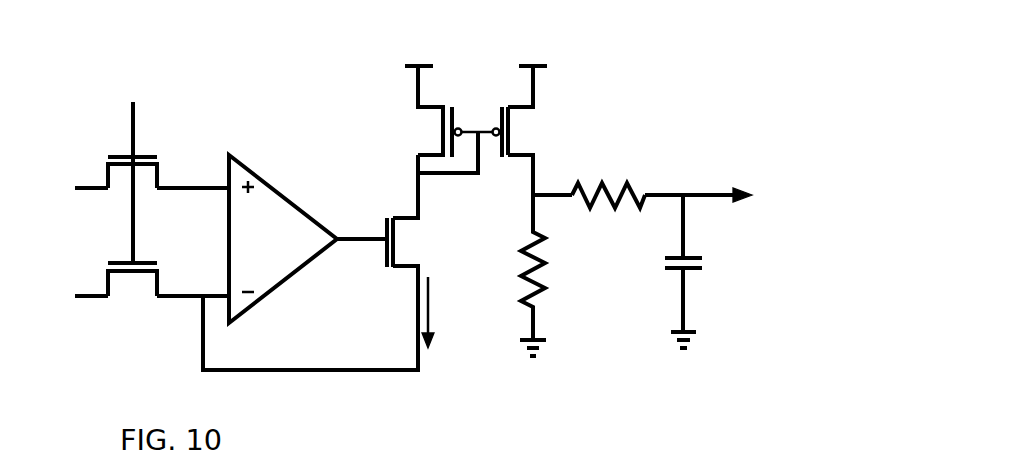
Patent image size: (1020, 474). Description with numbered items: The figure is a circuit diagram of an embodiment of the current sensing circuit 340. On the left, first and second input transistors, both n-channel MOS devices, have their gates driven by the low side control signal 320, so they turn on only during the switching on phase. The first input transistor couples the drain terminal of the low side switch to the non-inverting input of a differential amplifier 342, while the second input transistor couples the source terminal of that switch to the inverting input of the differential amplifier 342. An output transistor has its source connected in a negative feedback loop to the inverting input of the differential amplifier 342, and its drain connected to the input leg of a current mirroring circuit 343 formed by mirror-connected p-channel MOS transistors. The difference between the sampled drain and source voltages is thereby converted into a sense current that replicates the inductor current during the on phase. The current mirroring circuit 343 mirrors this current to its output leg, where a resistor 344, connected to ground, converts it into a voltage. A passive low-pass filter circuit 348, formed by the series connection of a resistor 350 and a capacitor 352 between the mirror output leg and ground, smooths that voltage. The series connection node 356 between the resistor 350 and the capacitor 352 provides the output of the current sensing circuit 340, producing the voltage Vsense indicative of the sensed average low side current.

The low side control signal 320 is at (143, 192).
The current sensing circuit 340 is at (617, 95).
The differential amplifier 342 is at (286, 280).
The current mirroring circuit 343 is at (478, 98).
The resistor 344 is at (528, 272).
The passive low-pass filter circuit 348 is at (625, 238).
The resistor 350 is at (612, 183).
The capacitor 352 is at (705, 267).
The series connection node 356 is at (702, 195).